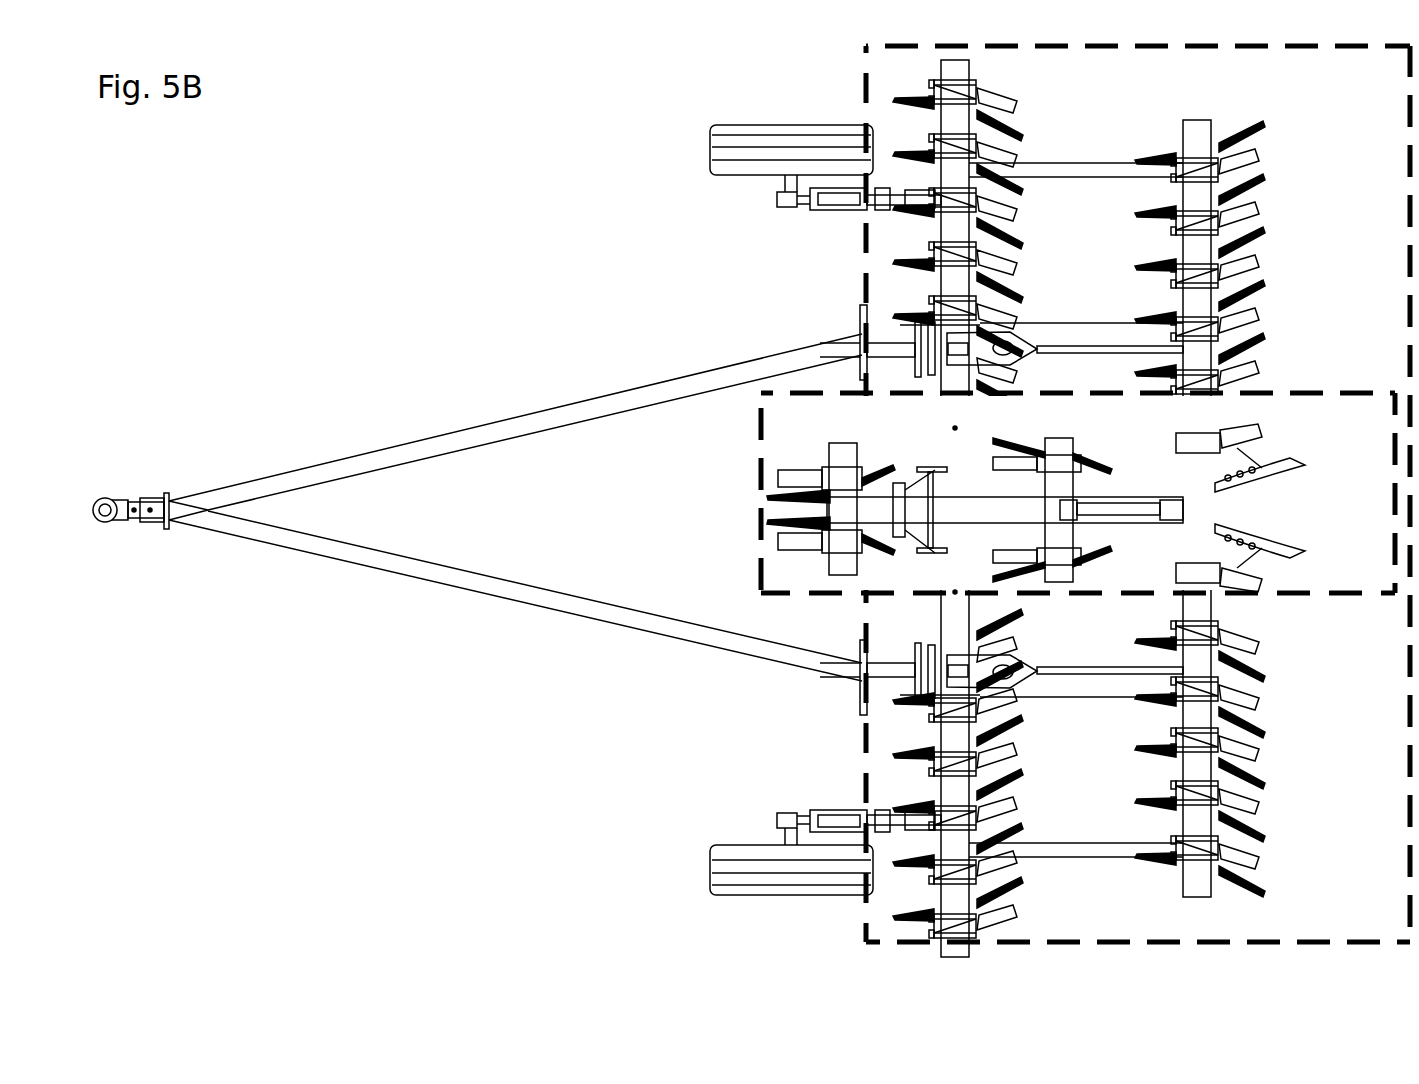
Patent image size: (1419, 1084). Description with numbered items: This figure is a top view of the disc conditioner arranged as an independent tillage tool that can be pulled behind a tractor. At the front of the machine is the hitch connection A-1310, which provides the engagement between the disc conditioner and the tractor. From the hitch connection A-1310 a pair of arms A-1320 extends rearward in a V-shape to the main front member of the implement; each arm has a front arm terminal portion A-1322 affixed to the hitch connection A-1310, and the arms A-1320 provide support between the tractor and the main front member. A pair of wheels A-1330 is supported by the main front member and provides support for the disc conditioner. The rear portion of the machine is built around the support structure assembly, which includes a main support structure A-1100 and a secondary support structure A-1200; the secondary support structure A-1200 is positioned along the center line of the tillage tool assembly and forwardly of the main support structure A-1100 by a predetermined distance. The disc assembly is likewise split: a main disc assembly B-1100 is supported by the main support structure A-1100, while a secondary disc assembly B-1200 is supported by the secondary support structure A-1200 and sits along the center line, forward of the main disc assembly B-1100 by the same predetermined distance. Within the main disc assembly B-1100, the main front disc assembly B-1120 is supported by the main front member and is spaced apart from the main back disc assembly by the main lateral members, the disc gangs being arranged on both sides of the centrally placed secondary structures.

The hitch connection A-1310 is at (477, 528).
The front arm terminal portion A-1322 is at (173, 518).
The pair of arms A-1320 is at (477, 453).
The pair of wheels A-1330 is at (754, 867).
The main support structure A-1100 is at (1010, 506).
The main disc assembly B-1100 is at (1103, 506).
The main front disc assembly B-1120 is at (1017, 55).
The secondary support structure A-1200 is at (977, 493).
The secondary disc assembly B-1200 is at (763, 442).